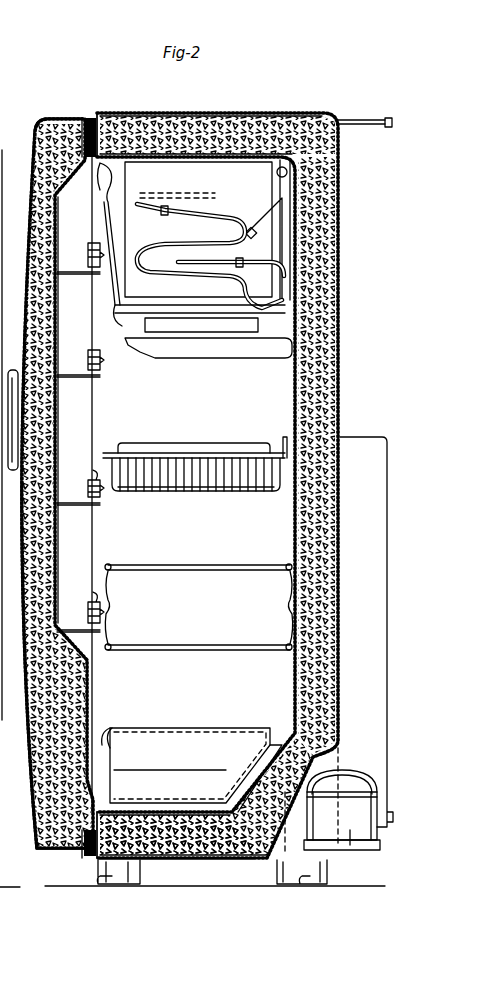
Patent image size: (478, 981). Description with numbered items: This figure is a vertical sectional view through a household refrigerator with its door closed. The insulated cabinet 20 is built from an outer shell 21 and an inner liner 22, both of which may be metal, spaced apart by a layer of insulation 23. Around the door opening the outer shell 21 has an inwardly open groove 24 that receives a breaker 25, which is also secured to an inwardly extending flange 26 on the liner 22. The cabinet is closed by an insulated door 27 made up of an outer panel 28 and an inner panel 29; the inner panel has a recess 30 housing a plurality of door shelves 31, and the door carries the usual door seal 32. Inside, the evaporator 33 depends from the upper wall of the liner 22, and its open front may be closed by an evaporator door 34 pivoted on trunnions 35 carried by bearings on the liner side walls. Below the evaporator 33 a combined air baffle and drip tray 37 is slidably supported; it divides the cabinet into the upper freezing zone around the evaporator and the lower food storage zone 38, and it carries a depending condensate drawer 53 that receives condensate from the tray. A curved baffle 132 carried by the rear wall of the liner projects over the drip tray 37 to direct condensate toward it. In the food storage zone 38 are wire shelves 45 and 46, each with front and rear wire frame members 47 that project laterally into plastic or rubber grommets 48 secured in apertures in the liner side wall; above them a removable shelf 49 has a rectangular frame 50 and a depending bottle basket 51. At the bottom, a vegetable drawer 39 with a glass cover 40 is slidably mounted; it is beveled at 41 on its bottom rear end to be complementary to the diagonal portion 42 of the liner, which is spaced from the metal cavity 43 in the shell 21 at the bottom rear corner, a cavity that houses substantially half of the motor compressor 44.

The insulated cabinet 20 is at (197, 477).
The outer shell 21 is at (343, 336).
The inner liner 22 is at (170, 159).
The insulation 23 is at (322, 300).
The groove 24 is at (94, 122).
The breaker 25 is at (120, 120).
The flange 26 is at (105, 128).
The insulated door 27 is at (59, 483).
The outer panel 28 is at (34, 141).
The inner panel 29 is at (58, 330).
The recess 30 is at (67, 431).
The door shelves 31 is at (70, 270).
The door seal 32 is at (85, 121).
The evaporator 33 is at (214, 172).
The evaporator door 34 is at (122, 223).
The trunnions 35 is at (120, 300).
The combined air baffle and drip tray 37 is at (195, 322).
The food storage zone 38 is at (283, 522).
The drawer 39 is at (110, 740).
The glass cover 40 is at (180, 727).
The bevel 41 is at (262, 771).
The diagonal portion 42 is at (280, 745).
The metal cavity 43 is at (315, 764).
The motor compressor 44 is at (350, 842).
The wire shelf 45 is at (194, 563).
The wire shelf 46 is at (189, 642).
The wire frame members 47 is at (286, 565).
The grommets 48 is at (198, 607).
The removable shelf 49 is at (197, 450).
The rectangular frame 50 is at (238, 451).
The bottle basket 51 is at (208, 491).
The condensate drawer 53 is at (152, 364).
The curved baffle 132 is at (320, 276).